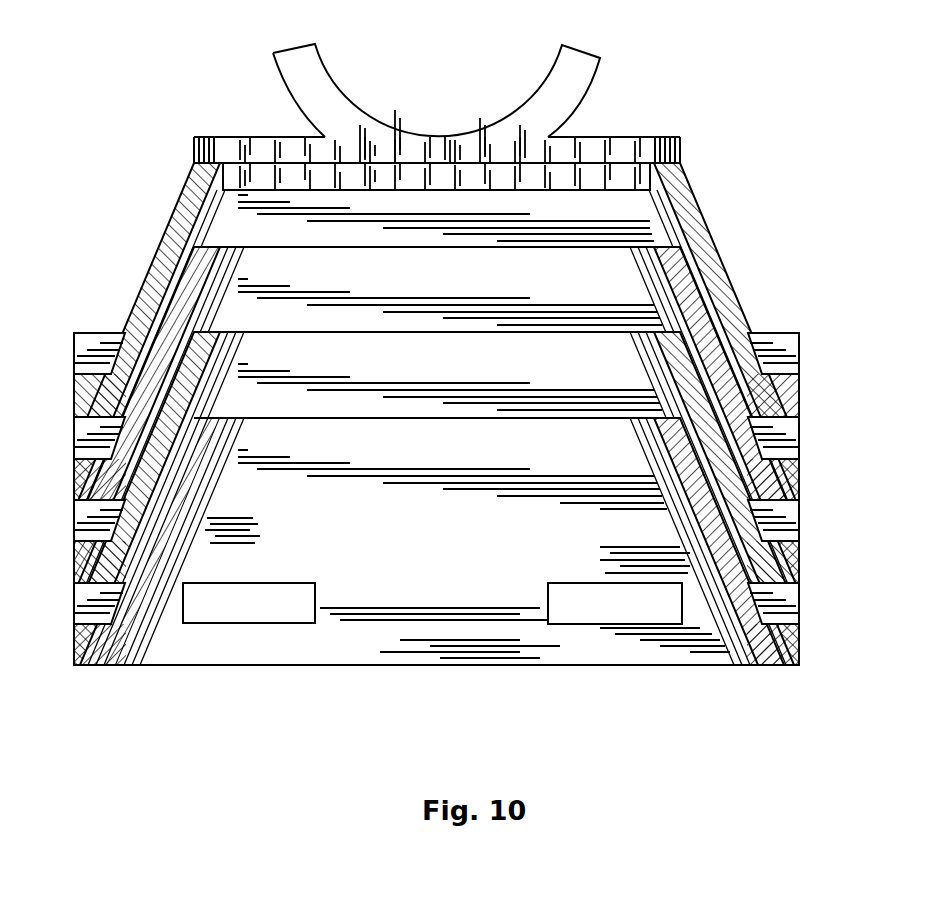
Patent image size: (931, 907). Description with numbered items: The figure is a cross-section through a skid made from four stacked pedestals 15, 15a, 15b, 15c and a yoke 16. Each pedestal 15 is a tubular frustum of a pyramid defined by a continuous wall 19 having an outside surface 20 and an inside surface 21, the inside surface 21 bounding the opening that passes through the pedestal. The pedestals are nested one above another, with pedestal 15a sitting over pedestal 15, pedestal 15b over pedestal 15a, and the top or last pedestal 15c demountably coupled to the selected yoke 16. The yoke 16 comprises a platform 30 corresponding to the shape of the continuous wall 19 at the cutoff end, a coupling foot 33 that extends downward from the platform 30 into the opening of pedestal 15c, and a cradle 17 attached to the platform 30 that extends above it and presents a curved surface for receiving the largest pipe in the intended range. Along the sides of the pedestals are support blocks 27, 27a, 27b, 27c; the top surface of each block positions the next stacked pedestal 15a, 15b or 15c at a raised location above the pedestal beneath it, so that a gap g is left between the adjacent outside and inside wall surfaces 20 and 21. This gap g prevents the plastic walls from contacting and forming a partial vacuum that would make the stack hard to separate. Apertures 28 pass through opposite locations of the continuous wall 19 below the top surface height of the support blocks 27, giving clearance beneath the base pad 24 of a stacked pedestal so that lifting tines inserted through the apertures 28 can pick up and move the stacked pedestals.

The pedestal 15 is at (667, 443).
The stacked pedestal 15a is at (665, 352).
The stacked pedestal 15b is at (728, 335).
The stacked pedestal 15c is at (700, 210).
The yoke 16 is at (597, 137).
The cradle 17 is at (547, 83).
The continuous wall 19 is at (697, 307).
The outside surface 20 is at (160, 275).
The inside surface 21 is at (237, 357).
The base pad 24 is at (78, 397).
The support block 27 is at (78, 595).
The support block 27a is at (83, 530).
The support block 27b is at (85, 445).
The support block 27c is at (74, 345).
The aperture 28 is at (262, 590).
The platform 30 is at (680, 150).
The coupling foot 33 is at (545, 183).
The gap g is at (148, 312).